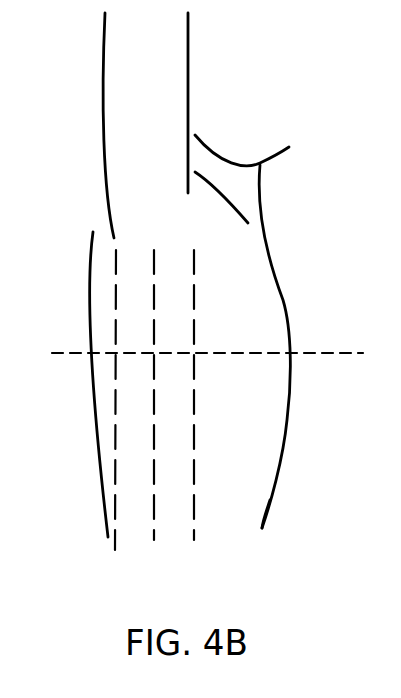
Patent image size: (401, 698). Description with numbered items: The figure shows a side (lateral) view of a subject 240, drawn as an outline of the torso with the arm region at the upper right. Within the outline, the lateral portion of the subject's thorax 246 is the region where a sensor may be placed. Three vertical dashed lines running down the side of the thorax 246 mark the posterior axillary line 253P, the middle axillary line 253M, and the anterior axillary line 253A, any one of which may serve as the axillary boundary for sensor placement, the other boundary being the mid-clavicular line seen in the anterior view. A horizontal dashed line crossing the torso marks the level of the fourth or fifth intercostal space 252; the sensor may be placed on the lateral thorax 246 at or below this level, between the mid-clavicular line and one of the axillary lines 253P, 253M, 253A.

The subject 240 is at (288, 311).
The thorax 246 is at (253, 440).
The fourth or fifth intercostal space 252 is at (313, 353).
The posterior axillary line 253P is at (113, 238).
The middle axillary line 253M is at (155, 223).
The anterior axillary line 253A is at (194, 256).